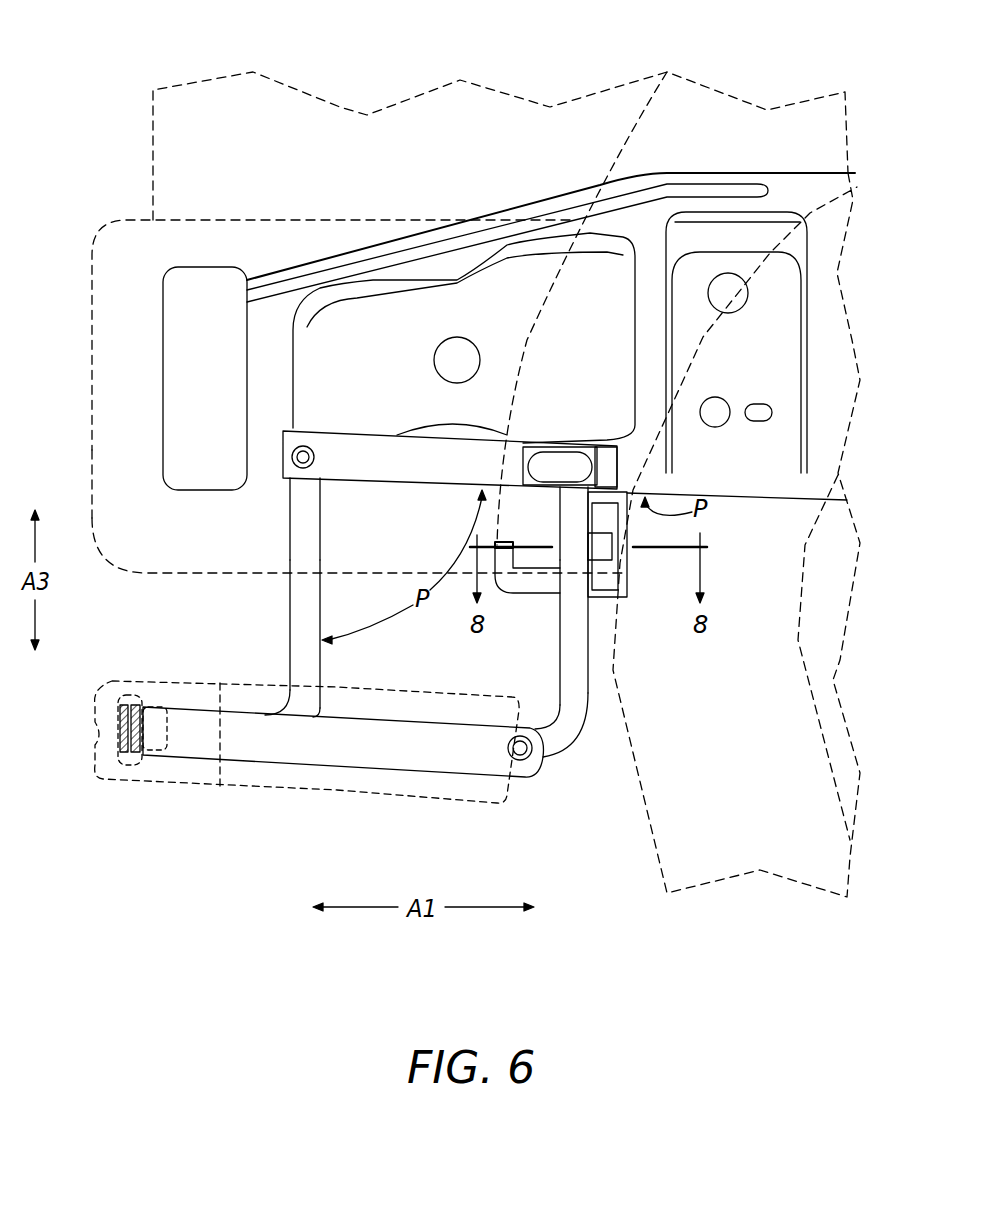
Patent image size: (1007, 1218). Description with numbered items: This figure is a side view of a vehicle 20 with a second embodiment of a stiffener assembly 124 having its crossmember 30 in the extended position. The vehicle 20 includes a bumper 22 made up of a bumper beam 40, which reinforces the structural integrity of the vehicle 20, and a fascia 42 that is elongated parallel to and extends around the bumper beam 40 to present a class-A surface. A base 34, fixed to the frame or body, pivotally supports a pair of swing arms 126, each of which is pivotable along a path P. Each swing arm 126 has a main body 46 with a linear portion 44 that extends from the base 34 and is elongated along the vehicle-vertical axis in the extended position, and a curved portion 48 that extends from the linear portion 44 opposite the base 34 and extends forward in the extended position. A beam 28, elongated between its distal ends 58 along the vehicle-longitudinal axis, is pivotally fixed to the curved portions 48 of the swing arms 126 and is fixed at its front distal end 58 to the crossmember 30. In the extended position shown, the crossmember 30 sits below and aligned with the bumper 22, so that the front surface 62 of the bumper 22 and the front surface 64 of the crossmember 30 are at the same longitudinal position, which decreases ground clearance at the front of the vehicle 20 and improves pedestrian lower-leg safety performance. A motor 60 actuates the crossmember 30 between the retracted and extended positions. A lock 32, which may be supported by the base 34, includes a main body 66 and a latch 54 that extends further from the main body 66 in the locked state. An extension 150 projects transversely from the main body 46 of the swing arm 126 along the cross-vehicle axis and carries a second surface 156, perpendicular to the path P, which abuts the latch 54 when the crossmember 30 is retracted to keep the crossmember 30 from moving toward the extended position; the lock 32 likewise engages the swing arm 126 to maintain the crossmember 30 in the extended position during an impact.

The vehicle 20 is at (78, 81).
The bumper 22 is at (72, 336).
The beam 28 is at (333, 748).
The crossmember 30 is at (110, 675).
The lock 32 is at (620, 577).
The base 34 is at (398, 460).
The bumper beam 40 is at (160, 327).
The fascia 42 is at (90, 492).
The linear portion 44 is at (288, 617).
The main body 46 is at (288, 540).
The curved portion 48 is at (287, 705).
The latch 54 is at (596, 545).
The distal end 58 is at (122, 745).
The motor 60 is at (553, 463).
The front surface of the bumper 62 is at (90, 445).
The front surface of the crossmember 64 is at (93, 703).
The main body of the lock 66 is at (603, 583).
The stiffener assembly 124 is at (113, 805).
The swing arm 126 is at (322, 607).
The extension 150 is at (503, 563).
The second surface 156 is at (503, 542).